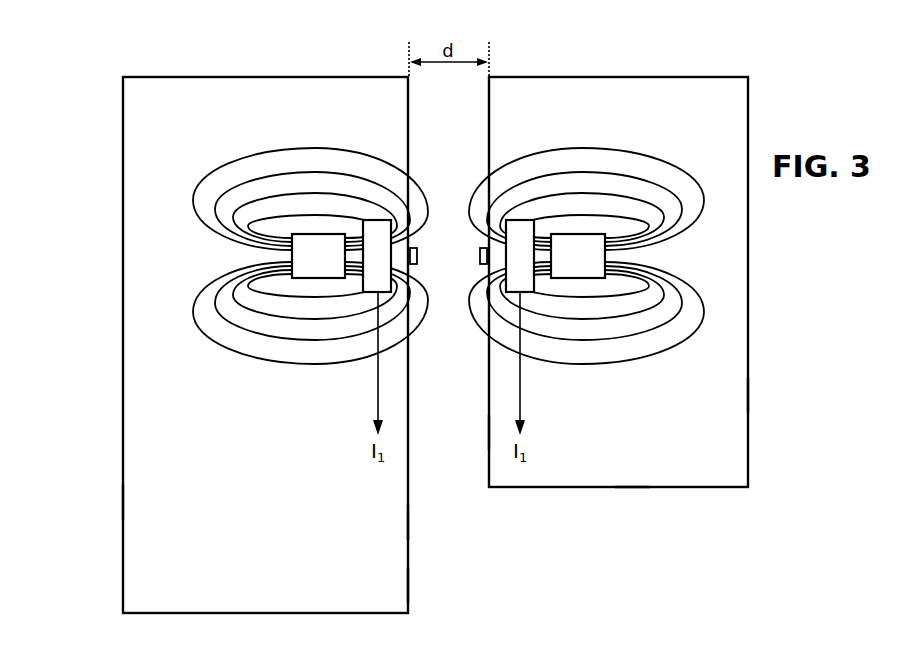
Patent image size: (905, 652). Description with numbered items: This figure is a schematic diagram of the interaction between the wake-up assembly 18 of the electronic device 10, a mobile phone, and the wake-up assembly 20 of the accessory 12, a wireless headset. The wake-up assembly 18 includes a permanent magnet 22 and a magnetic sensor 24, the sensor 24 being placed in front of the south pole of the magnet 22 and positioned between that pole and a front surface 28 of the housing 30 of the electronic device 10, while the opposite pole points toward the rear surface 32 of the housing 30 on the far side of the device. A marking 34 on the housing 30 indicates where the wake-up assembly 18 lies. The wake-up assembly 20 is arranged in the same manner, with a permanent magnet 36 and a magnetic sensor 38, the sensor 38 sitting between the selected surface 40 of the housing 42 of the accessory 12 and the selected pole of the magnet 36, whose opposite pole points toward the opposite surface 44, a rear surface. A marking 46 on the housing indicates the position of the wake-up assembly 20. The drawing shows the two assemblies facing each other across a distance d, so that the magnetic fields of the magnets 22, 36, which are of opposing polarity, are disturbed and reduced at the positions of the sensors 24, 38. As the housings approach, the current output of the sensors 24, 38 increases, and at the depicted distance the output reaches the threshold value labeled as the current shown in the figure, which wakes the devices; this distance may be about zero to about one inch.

The electronic device 10 is at (265, 345).
The accessory 12 is at (618, 282).
The wake-up assembly 18 is at (200, 256).
The wake-up assembly 20 is at (670, 256).
The permanent magnet 22 is at (318, 278).
The magnetic sensor 24 is at (373, 292).
The front surface 28 is at (408, 522).
The housing 30 is at (408, 585).
The housing of electronic device 32 is at (123, 502).
The marking 34 is at (417, 257).
The permanent magnet 36 is at (579, 278).
The magnetic sensor 38 is at (525, 292).
The selected surface 40 is at (489, 434).
The housing 42 is at (632, 487).
The opposite surface 44 is at (748, 395).
The marking 46 is at (479, 257).